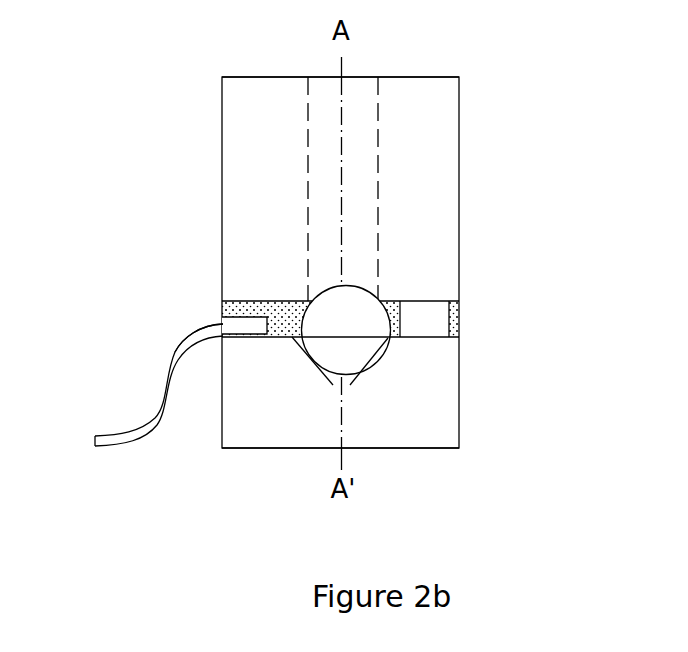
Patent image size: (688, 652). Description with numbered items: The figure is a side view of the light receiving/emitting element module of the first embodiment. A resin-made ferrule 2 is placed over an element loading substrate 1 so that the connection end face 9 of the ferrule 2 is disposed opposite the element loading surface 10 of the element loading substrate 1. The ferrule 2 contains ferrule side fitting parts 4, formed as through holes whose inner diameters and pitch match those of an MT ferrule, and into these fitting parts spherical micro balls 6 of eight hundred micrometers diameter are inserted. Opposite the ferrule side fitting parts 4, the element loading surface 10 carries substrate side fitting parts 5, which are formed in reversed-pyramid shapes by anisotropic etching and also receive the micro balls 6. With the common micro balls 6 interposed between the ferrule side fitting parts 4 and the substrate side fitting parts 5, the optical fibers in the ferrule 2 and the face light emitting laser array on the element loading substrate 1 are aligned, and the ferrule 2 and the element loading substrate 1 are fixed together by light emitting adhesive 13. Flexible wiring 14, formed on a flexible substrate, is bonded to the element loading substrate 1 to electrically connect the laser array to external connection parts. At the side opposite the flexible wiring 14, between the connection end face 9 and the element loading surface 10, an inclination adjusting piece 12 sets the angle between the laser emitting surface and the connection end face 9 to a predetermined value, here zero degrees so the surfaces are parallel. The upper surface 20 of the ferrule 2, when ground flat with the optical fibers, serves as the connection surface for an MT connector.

The element loading substrate 1 is at (290, 409).
The ferrule 2 is at (251, 109).
The ferrule side fitting parts 4 is at (360, 207).
The substrate side fitting parts 5 is at (367, 370).
The micro balls 6 is at (323, 317).
The connection end face 9 is at (222, 301).
The element loading surface 10 is at (276, 330).
The inclination adjusting piece 12 is at (430, 322).
The light emitting adhesive 13 is at (223, 320).
The flexible wiring 14 is at (125, 446).
The upper surface 20 is at (403, 77).